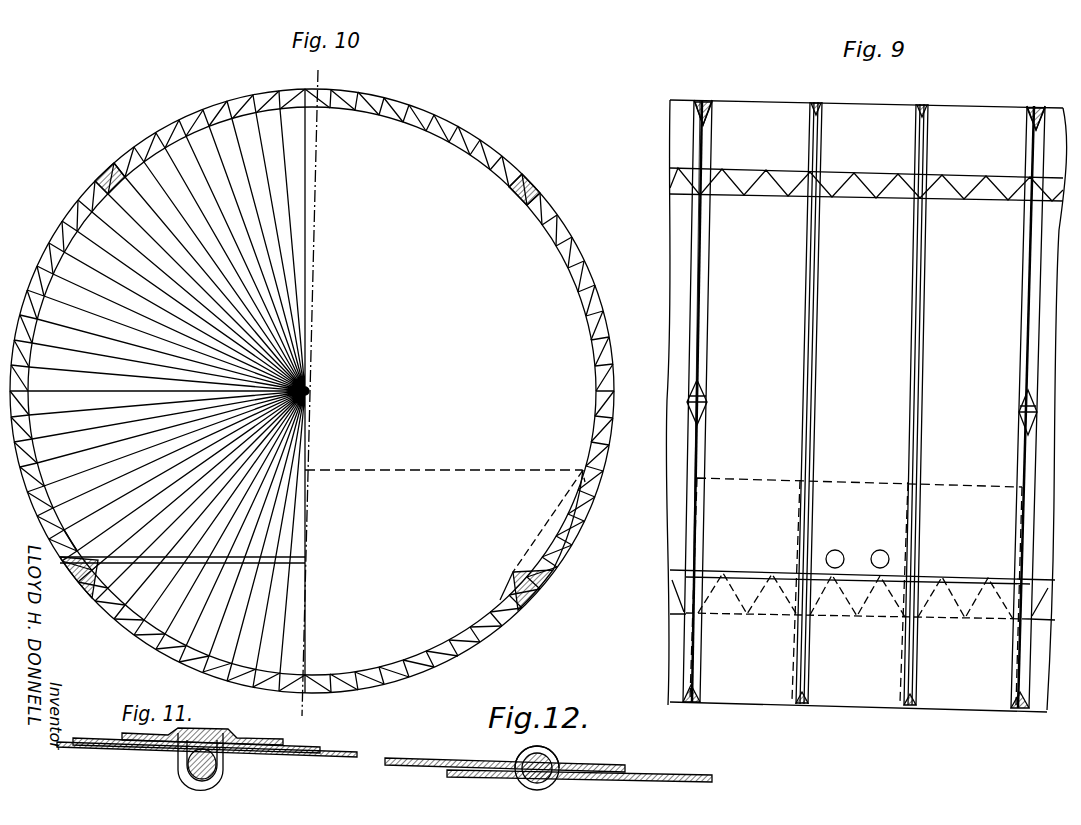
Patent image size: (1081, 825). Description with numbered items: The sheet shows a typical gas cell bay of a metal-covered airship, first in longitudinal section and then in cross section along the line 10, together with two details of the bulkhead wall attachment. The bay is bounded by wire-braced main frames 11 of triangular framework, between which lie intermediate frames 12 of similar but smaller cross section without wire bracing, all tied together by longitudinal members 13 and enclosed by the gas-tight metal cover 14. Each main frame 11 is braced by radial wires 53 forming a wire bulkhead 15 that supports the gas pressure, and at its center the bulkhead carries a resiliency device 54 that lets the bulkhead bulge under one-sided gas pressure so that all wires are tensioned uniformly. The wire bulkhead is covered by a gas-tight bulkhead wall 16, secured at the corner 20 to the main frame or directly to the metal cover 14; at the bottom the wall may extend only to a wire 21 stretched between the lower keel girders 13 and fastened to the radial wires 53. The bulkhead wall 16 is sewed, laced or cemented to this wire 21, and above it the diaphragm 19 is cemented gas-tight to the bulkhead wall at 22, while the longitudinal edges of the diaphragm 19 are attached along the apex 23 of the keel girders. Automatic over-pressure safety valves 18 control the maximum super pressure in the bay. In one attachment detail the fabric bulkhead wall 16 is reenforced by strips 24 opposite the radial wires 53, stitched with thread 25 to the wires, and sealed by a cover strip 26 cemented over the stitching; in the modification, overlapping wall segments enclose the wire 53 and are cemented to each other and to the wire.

In FIG. 9, the section line 10 is at (680, 108).
In FIG. 10, the main frame 11 is at (230, 100).
In FIG. 9, the main frame 11 is at (708, 104).
In FIG. 10, the intermediate frame 12 is at (432, 118).
In FIG. 9, the intermediate frame 12 is at (922, 106).
In FIG. 10, the longitudinal member 13 is at (112, 168).
In FIG. 9, the longitudinal member 13 is at (852, 176).
In FIG. 9, the metal cover 14 is at (972, 103).
In FIG. 10, the wire bulkhead 15 is at (302, 236).
In FIG. 9, the wire bulkhead 15 is at (700, 209).
In FIG. 9, the gas-tight bulkhead wall 16 is at (708, 153).
In FIG. 11, the gas-tight bulkhead wall 16 is at (352, 751).
In FIG. 12, the gas-tight bulkhead wall 16 is at (434, 762).
In FIG. 10, the automatic over-pressure safety valve 18 is at (566, 554).
In FIG. 9, the automatic over-pressure safety valve 18 is at (878, 552).
In FIG. 10, the diaphragm 19 is at (422, 470).
In FIG. 9, the diaphragm 19 is at (771, 481).
In FIG. 9, the corner 20 is at (713, 103).
In FIG. 10, the wire 21 is at (182, 565).
In FIG. 10, the diaphragm-to-bulkhead-wall joint 22 is at (300, 562).
In FIG. 10, the apex of lower keel girder 23 is at (513, 572).
In FIG. 11, the reenforcing strip 24 is at (303, 745).
In FIG. 11, the thread 25 is at (177, 761).
In FIG. 11, the cover strip 26 is at (247, 735).
In FIG. 10, the radial wire 53 is at (86, 331).
In FIG. 11, the radial wire 53 is at (224, 767).
In FIG. 12, the radial wire 53 is at (556, 780).
In FIG. 9, the resiliency device 54 is at (703, 395).